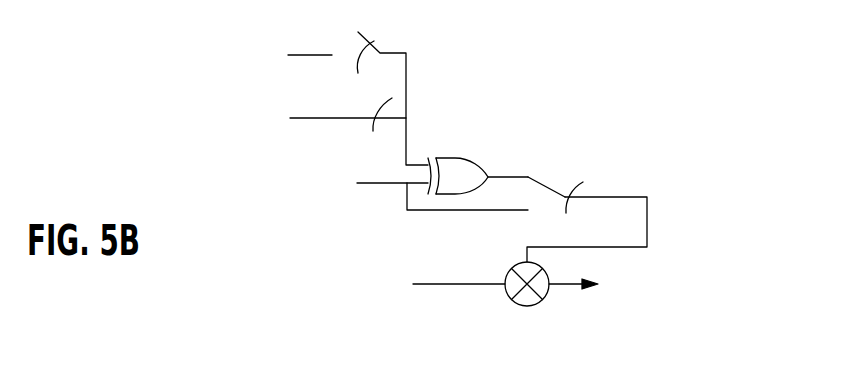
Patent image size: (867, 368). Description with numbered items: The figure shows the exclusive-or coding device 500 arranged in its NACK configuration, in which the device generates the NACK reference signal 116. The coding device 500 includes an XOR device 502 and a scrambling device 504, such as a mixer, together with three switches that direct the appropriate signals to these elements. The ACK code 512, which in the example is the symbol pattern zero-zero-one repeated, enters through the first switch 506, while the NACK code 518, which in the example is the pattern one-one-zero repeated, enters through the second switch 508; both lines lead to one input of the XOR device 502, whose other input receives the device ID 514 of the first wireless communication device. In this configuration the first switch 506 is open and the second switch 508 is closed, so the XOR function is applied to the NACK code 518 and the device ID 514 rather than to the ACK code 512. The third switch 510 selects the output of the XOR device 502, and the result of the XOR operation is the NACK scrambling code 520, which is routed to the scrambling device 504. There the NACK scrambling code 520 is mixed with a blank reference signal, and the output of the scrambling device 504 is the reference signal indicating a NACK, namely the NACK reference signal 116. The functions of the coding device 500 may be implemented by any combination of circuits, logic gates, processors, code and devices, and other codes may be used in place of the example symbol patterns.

The XOR coding device 500 is at (631, 122).
The XOR device 502 is at (471, 162).
The scrambling device 504 is at (528, 306).
The first switch 506 is at (386, 48).
The second switch 508 is at (395, 117).
The third switch 510 is at (600, 171).
The ACK code 512 is at (160, 40).
The device ID 514 is at (340, 210).
The NACK code 518 is at (103, 143).
The NACK scrambling code 520 is at (648, 225).
The NACK reference signal 116 is at (675, 318).